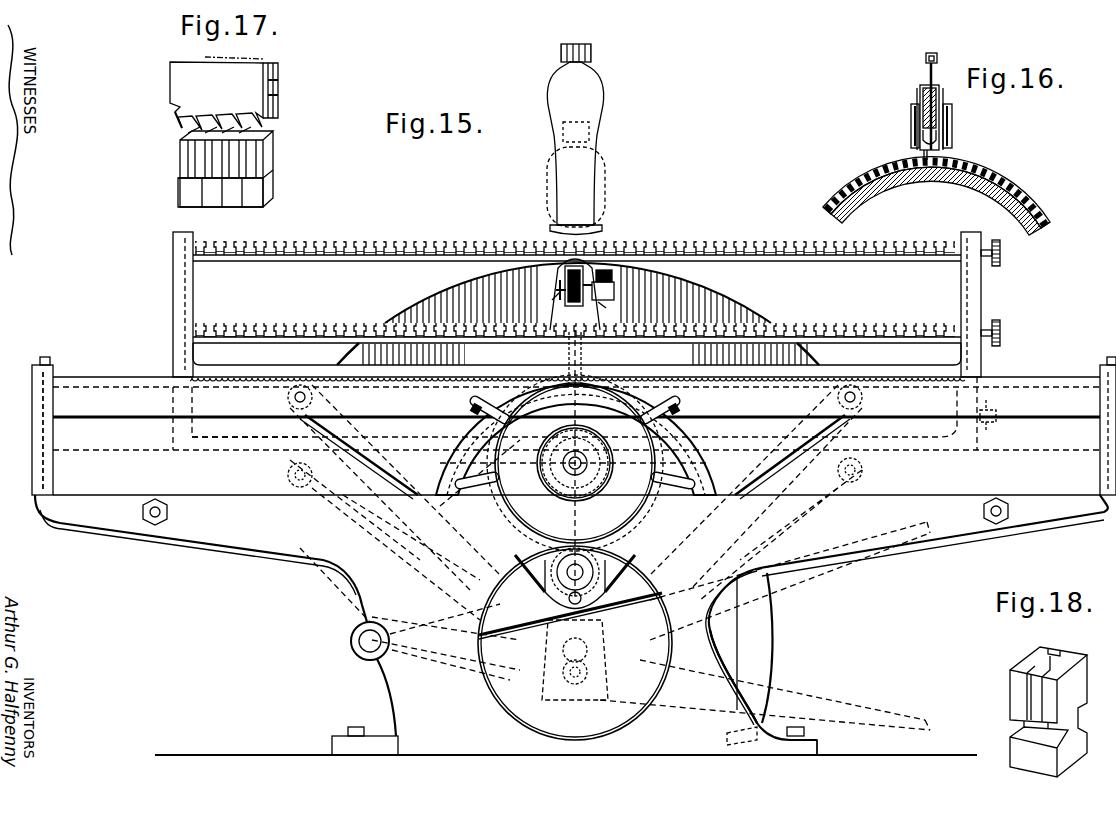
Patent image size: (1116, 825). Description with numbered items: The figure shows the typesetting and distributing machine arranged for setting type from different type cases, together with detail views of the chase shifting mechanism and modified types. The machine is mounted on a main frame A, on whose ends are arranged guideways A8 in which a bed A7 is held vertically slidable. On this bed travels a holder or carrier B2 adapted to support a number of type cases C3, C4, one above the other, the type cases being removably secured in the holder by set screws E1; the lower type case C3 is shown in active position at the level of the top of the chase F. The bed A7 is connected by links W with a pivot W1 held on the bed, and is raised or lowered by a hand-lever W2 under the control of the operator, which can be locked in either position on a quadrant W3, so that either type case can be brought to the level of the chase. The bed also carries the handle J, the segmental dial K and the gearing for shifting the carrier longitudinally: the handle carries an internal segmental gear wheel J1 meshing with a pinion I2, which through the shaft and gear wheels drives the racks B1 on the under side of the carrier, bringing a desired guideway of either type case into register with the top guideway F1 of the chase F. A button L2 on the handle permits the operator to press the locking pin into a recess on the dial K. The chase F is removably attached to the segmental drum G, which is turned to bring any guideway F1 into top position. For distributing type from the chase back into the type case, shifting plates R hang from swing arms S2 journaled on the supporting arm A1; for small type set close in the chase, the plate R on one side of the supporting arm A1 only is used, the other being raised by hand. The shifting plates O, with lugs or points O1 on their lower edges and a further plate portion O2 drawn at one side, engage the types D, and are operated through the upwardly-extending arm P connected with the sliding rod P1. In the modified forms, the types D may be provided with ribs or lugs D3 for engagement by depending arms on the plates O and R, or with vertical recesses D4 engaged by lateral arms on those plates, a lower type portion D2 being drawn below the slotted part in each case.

In FIG. 15, the main frame A is at (150, 541).
In FIG. 15, the supporting arm A1 is at (598, 262).
In FIG. 16, the supporting arm A1 is at (920, 99).
In FIG. 15, the bed A7 is at (137, 418).
In FIG. 15, the guideways A8 is at (40, 466).
In FIG. 15, the racks B1 is at (908, 384).
In FIG. 15, the holder or carrier B2 is at (173, 292).
In FIG. 15, the type case C3 is at (868, 343).
In FIG. 15, the type case C4 is at (822, 259).
In FIG. 15, the types D is at (700, 248).
In FIG. 16, the types D is at (1004, 185).
In FIG. 17, the types D is at (273, 158).
In FIG. 18, the types D is at (1052, 658).
In FIG. 17, the die block base D2 is at (268, 190).
In FIG. 18, the die block base D2 is at (1022, 730).
In FIG. 17, the ribs or lugs D3 is at (190, 157).
In FIG. 18, the vertical recesses D4 is at (1032, 690).
In FIG. 15, the set screws E1 is at (1000, 255).
In FIG. 15, the chase F is at (458, 396).
In FIG. 16, the chase F is at (936, 195).
In FIG. 16, the guideways F1 is at (857, 188).
In FIG. 15, the segmental drum G is at (555, 505).
In FIG. 15, the pinion I2 is at (598, 402).
In FIG. 15, the handle J is at (589, 96).
In FIG. 15, the internal segmental gear wheel J1 is at (555, 404).
In FIG. 15, the segmental dial K is at (713, 297).
In FIG. 15, the button L2 is at (592, 56).
In FIG. 17, the shifting plates O is at (172, 72).
In FIG. 17, the lugs or points O1 is at (178, 119).
In FIG. 17, the plate flange O2 is at (280, 92).
In FIG. 16, the upwardly-extending arm P is at (937, 74).
In FIG. 16, the rod P1 is at (937, 60).
In FIG. 15, the shifting plates R is at (552, 300).
In FIG. 16, the shifting plates R is at (944, 100).
In FIG. 16, the swing arms S2 is at (911, 130).
In FIG. 15, the links W is at (380, 468).
In FIG. 15, the pivot W1 is at (624, 606).
In FIG. 15, the hand-lever W2 is at (505, 640).
In FIG. 15, the quadrant W3 is at (768, 652).